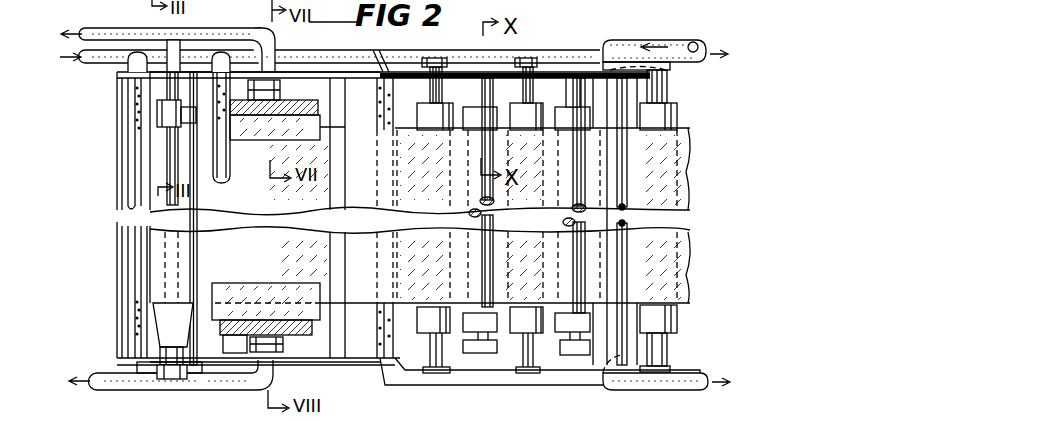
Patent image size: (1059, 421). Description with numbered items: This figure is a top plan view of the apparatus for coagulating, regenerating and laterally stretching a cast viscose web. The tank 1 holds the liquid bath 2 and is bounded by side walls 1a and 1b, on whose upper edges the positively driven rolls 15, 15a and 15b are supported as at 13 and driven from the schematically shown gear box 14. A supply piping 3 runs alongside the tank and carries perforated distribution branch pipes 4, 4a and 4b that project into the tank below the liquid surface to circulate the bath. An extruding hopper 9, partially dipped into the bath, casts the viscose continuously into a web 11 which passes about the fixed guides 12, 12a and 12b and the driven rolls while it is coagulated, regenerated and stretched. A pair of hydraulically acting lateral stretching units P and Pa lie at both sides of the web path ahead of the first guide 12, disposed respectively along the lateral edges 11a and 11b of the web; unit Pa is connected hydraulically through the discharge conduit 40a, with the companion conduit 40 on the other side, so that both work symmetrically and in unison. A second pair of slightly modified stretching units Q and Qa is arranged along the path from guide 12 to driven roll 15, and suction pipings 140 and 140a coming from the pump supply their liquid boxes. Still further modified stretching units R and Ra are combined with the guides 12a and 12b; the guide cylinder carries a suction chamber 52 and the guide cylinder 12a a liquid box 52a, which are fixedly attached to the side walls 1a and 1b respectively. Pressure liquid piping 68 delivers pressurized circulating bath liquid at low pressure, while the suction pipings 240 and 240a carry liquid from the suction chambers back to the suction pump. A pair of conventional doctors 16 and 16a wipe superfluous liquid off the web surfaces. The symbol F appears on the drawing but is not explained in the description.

The tank 1 is at (118, 160).
The side wall of the tank 1a is at (323, 73).
The side wall of the tank 1b is at (301, 368).
The liquid bath 2 is at (350, 348).
The supply piping 3 is at (100, 63).
The perforated distribution branch pipe 4 is at (131, 123).
The perforated distribution branch pipe 4a is at (219, 163).
The perforated distribution branch pipe 4b is at (378, 102).
The extruding hopper 9 is at (150, 252).
The web 11 is at (368, 267).
The lateral edge of the web 11a is at (333, 136).
The lateral edge of the web 11b is at (358, 305).
The guide 12 is at (193, 188).
The guide 12a is at (470, 212).
The guide 12b is at (566, 185).
The roll support 13 is at (437, 56).
The gear box 14 is at (436, 380).
The driven roll 15 is at (430, 112).
The driven roll 15a is at (522, 315).
The driven roll 15b is at (668, 115).
The doctor 16 is at (615, 221).
The doctor 16a is at (629, 194).
The discharge conduit 40 is at (100, 36).
The discharge conduit 40a is at (130, 383).
The suction chamber 52 is at (574, 82).
The liquid box 52a is at (513, 350).
The pressure liquid piping 68 is at (628, 44).
The suction piping 140 is at (209, 37).
The suction piping 140a is at (224, 380).
The suction piping 240 is at (693, 43).
The suction piping 240a is at (683, 395).
The lateral stretching unit P is at (172, 141).
The lateral stretching unit Pa is at (170, 328).
The stretching unit Q is at (303, 108).
The stretching unit Qa is at (255, 288).
The stretching unit R is at (471, 115).
The stretching unit Ra is at (480, 322).
The filter F is at (255, 345).